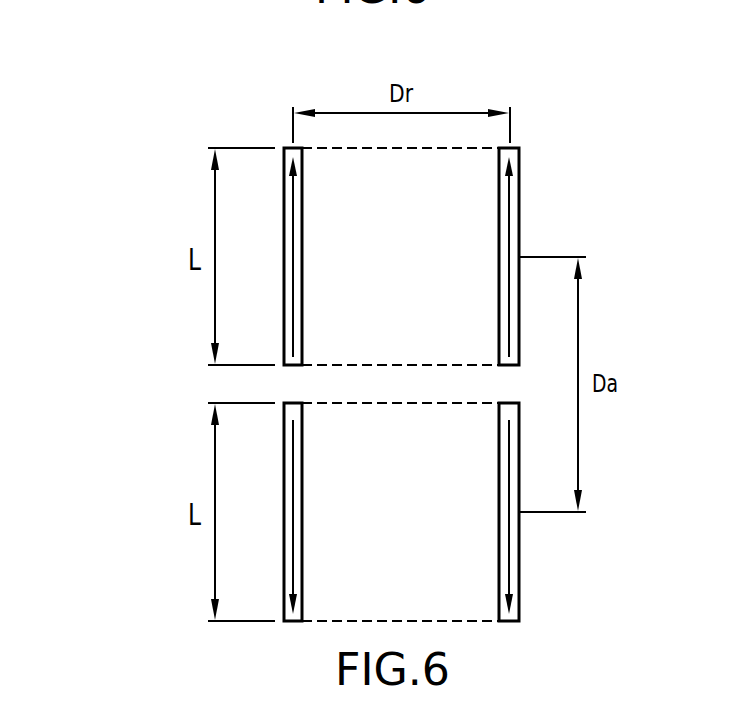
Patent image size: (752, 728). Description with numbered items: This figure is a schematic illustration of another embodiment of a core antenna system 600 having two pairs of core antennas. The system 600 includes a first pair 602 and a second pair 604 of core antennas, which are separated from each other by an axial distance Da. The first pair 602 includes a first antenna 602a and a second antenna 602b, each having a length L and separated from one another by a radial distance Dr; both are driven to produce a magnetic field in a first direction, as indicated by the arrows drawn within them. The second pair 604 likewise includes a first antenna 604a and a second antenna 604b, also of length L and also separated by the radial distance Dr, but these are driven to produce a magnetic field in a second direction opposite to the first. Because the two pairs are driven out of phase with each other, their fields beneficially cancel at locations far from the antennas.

The core antenna system 600 is at (127, 80).
The first pair of core antennas 602 is at (159, 223).
The first antenna 602a is at (303, 242).
The second antenna 602b is at (499, 187).
The second pair of core antennas 604 is at (172, 453).
The first antenna 604a is at (303, 497).
The second antenna 604b is at (499, 443).